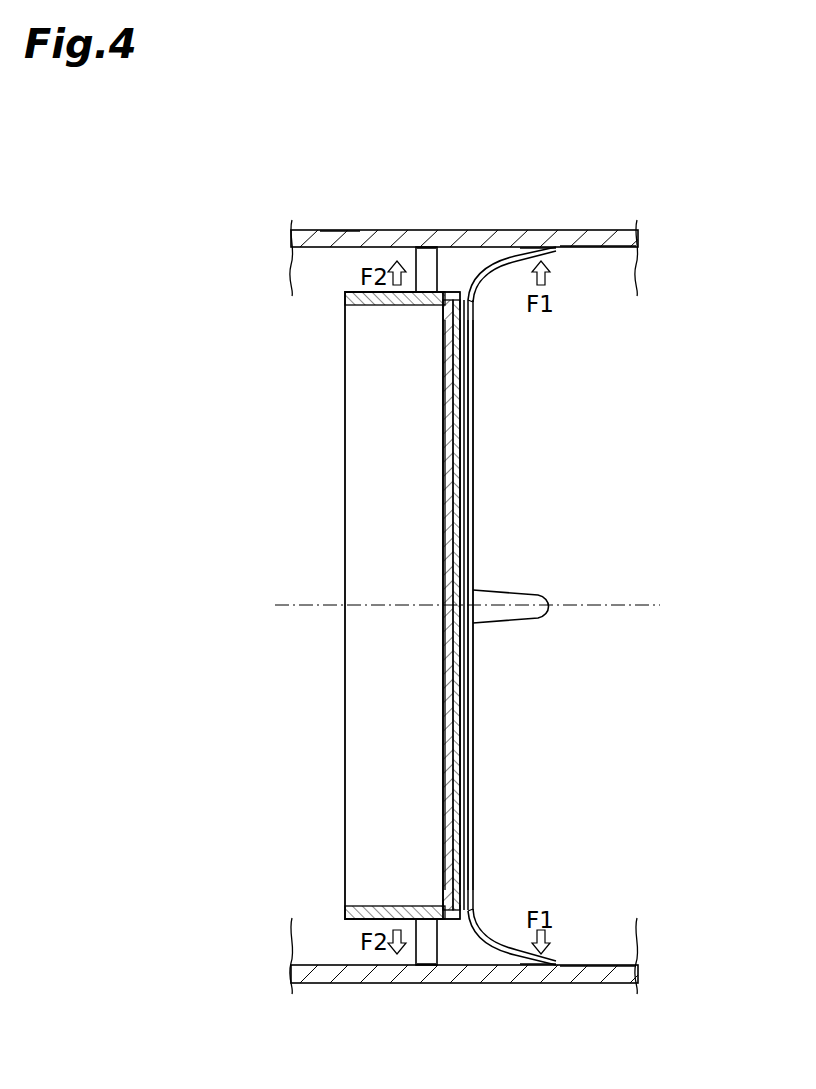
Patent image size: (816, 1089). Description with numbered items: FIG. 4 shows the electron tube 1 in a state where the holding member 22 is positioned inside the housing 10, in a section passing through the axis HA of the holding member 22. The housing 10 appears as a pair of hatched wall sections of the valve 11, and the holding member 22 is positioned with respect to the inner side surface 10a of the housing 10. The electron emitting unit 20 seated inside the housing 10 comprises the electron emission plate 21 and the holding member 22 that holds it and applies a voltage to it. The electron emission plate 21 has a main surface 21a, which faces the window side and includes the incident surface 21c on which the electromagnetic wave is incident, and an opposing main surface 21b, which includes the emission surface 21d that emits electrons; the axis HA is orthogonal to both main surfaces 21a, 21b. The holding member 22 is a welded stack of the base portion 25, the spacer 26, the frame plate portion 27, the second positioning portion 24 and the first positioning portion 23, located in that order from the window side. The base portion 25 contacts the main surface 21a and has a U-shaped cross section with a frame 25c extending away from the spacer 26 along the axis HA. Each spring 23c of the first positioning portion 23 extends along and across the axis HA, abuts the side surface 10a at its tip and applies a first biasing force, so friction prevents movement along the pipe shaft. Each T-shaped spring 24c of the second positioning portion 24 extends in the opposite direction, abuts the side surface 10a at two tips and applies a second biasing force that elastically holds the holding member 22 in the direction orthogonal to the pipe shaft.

The battery mounting structure 1 is at (252, 174).
The housing 10 is at (585, 240).
The inner side surface 10a is at (606, 249).
The valve 11 is at (337, 243).
The electron emitting unit 20 is at (513, 410).
The electron emission plate 21 is at (447, 493).
The main surface 21a is at (447, 750).
The main surface 21b is at (468, 735).
The incident surface 21c is at (447, 545).
The emission surface 21d is at (474, 540).
The holding member 22 is at (343, 296).
The first positioning portion 23 is at (477, 295).
The spring 23c is at (520, 258).
The second positioning portion 24 is at (440, 285).
The spring 24c is at (425, 262).
The base portion 25 is at (385, 306).
The frame 25c is at (380, 910).
The spacer 26 is at (447, 390).
The frame plate portion 27 is at (447, 413).
The axis HA is at (650, 604).